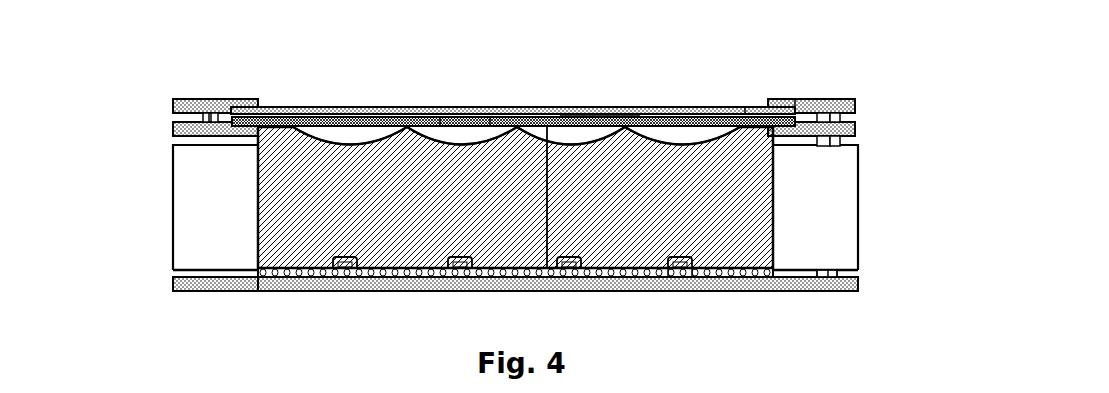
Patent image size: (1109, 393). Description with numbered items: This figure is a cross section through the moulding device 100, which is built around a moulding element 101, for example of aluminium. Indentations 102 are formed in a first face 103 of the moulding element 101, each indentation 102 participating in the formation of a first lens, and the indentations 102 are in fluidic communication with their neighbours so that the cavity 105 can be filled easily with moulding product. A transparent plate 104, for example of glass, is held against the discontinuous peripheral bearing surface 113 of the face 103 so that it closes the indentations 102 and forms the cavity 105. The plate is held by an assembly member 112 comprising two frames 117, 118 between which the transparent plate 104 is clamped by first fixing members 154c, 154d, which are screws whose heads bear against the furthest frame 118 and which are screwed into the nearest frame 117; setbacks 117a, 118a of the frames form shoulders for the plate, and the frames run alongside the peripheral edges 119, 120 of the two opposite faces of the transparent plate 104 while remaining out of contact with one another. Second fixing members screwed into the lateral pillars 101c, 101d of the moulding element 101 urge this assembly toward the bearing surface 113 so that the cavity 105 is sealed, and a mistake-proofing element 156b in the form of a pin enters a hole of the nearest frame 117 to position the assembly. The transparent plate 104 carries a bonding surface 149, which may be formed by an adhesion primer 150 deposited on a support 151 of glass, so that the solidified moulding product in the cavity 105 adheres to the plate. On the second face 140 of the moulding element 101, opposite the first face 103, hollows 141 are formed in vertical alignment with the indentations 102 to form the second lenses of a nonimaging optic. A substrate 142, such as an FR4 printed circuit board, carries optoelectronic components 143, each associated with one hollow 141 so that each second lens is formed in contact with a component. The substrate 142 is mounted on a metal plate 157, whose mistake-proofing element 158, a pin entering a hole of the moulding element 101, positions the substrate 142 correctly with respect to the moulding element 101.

The moulding device 100 is at (229, 79).
The moulding element 101 is at (516, 236).
The lateral pillar 101c is at (190, 250).
The lateral pillar 101d is at (840, 253).
The indentation 102 is at (519, 177).
The face 103 is at (513, 82).
The transparent plate 104 is at (536, 57).
The cavity 105 is at (461, 137).
The assembly member 112 is at (877, 95).
The peripheral bearing surface 113 is at (748, 110).
The frame 117 is at (192, 130).
The setback 117a is at (804, 128).
The frame 118 is at (185, 105).
The setback 118a is at (820, 98).
The peripheral edge 119 is at (783, 147).
The peripheral edge 120 is at (773, 98).
The second face 140 is at (536, 311).
The hollow 141 is at (682, 257).
The substrate 142 is at (515, 304).
The optoelectronic component 143 is at (682, 272).
The bonding surface 149 is at (547, 268).
The adhesion primer 150 is at (463, 123).
The support 151 is at (597, 116).
The first fixing member 154c is at (210, 115).
The first fixing member 154d is at (808, 106).
The mistake-proofing element 156b is at (828, 147).
The metal plate 157 is at (218, 283).
The mistake-proofing element 158 is at (822, 278).